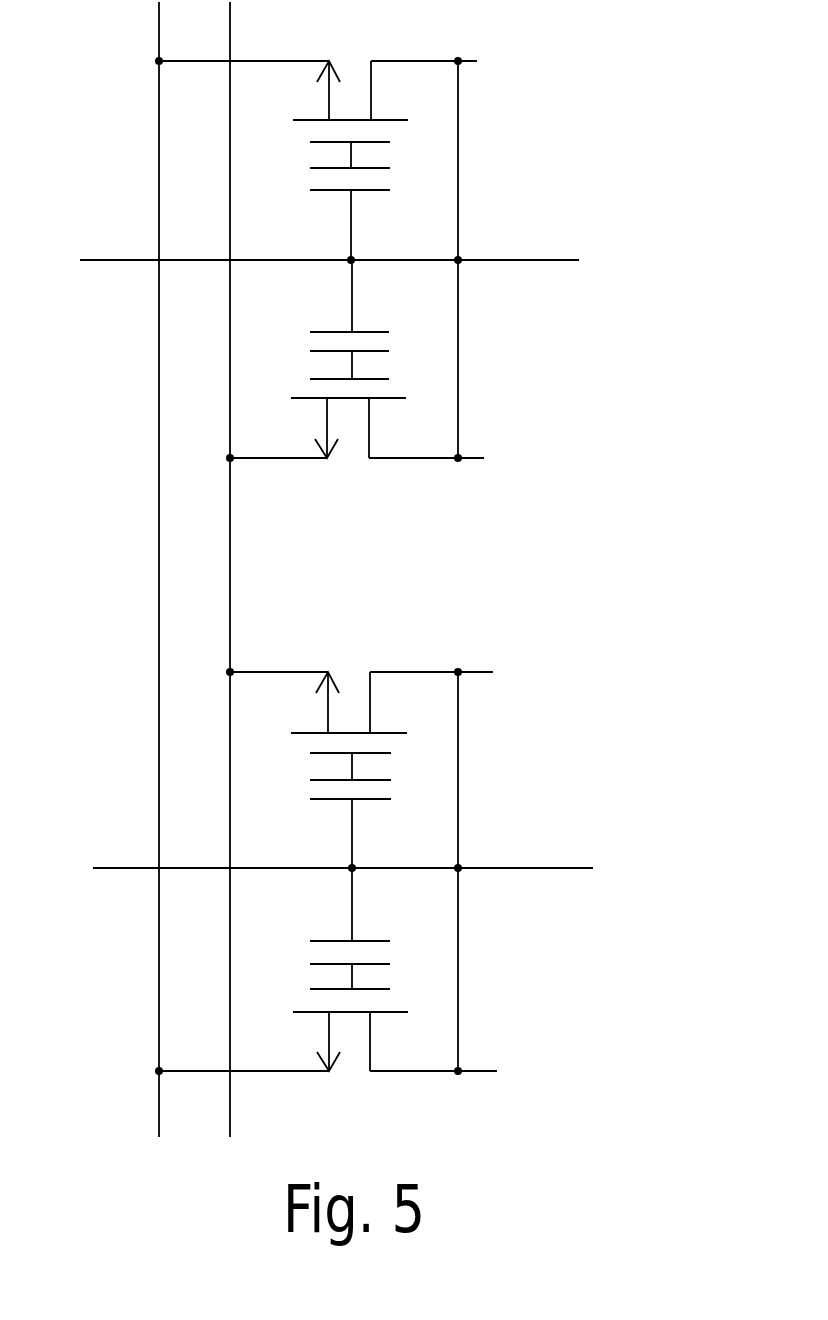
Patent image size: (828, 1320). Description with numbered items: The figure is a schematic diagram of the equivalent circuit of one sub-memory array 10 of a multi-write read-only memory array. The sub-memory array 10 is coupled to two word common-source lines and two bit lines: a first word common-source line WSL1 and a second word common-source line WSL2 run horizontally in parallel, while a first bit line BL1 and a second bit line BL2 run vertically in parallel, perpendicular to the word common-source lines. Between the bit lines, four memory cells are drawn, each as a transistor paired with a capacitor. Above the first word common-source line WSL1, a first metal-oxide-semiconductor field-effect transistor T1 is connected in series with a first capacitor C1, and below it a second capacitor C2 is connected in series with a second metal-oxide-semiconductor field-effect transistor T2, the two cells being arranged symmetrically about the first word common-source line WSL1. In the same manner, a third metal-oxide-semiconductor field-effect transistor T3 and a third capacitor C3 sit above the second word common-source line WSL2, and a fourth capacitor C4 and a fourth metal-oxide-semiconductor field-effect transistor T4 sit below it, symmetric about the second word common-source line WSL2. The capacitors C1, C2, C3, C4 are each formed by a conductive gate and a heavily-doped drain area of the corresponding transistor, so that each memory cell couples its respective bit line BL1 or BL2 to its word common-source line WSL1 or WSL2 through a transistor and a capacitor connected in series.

The sub-memory array 10 is at (371, 569).
The first bit line BL1 is at (159, 118).
The second bit line BL2 is at (230, 170).
The first word common-source line WSL1 is at (571, 260).
The second word common-source line WSL2 is at (582, 868).
The first metal-oxide-semiconductor field-effect transistor T1 is at (310, 143).
The second metal-oxide-semiconductor field-effect transistor T2 is at (310, 379).
The third metal-oxide-semiconductor field-effect transistor T3 is at (310, 753).
The fourth metal-oxide-semiconductor field-effect transistor T4 is at (310, 991).
The first capacitor C1 is at (310, 190).
The second capacitor C2 is at (310, 332).
The third capacitor C3 is at (310, 799).
The fourth capacitor C4 is at (310, 941).